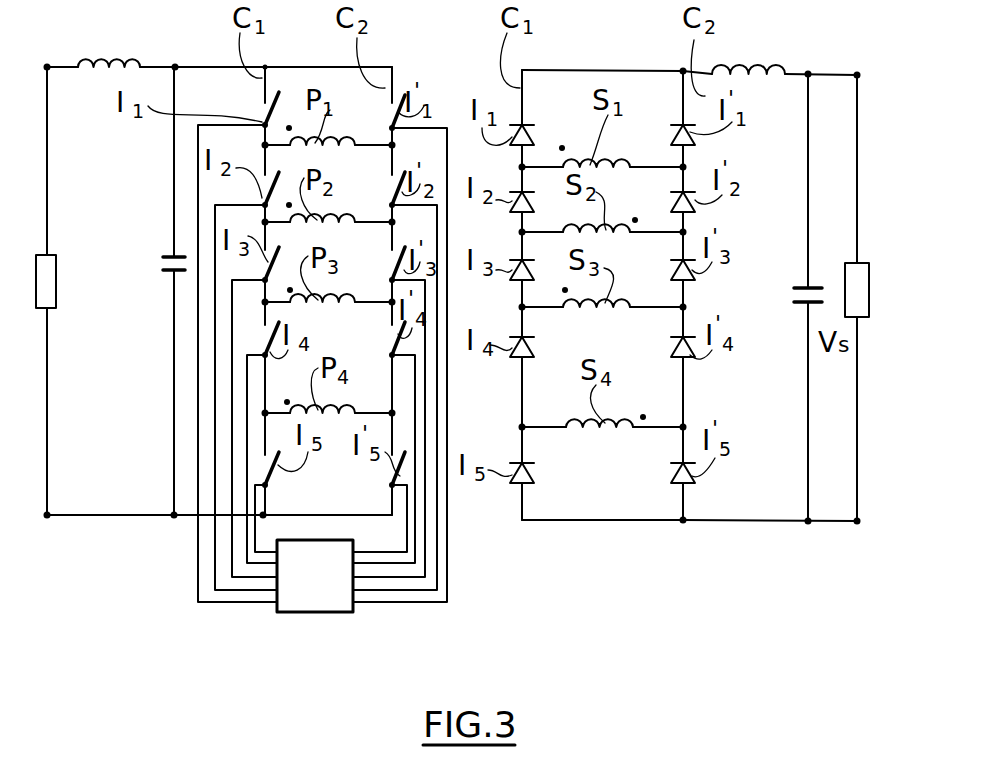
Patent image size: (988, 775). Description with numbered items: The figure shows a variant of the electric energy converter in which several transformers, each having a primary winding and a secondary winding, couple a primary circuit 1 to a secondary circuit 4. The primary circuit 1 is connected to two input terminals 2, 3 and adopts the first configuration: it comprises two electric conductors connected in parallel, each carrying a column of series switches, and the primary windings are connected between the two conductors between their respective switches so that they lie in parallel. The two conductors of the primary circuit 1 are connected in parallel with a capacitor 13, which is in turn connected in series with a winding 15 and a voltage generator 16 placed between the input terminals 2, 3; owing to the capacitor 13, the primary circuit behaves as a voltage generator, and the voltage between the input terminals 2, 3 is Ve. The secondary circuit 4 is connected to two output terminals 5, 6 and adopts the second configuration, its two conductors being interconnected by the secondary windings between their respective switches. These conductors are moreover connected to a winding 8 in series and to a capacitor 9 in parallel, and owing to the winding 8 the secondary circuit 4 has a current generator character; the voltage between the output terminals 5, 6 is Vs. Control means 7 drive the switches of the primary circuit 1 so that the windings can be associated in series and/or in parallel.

The primary circuit 1 is at (203, 616).
The input terminal 2 is at (47, 64).
The input terminal 3 is at (47, 518).
The secondary circuit 4 is at (690, 530).
The output terminal 5 is at (857, 74).
The output terminal 6 is at (857, 524).
The control means 7 is at (315, 576).
The winding 8 is at (758, 72).
The capacitor 9 is at (798, 283).
The capacitor 13 is at (172, 256).
The winding 15 is at (113, 63).
The voltage generator 16 is at (56, 268).